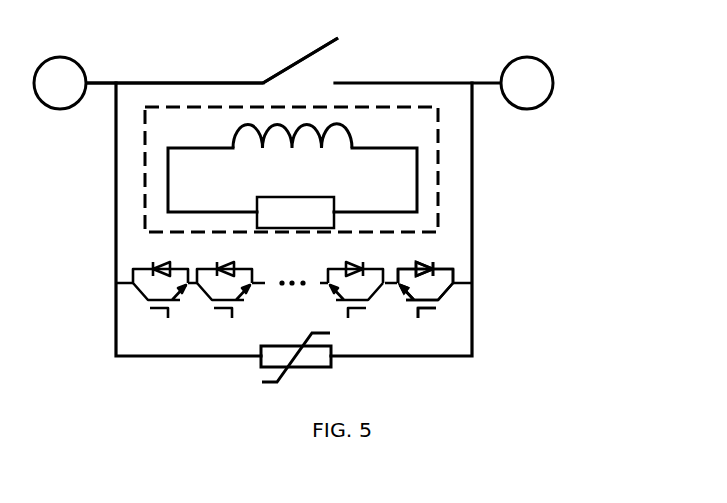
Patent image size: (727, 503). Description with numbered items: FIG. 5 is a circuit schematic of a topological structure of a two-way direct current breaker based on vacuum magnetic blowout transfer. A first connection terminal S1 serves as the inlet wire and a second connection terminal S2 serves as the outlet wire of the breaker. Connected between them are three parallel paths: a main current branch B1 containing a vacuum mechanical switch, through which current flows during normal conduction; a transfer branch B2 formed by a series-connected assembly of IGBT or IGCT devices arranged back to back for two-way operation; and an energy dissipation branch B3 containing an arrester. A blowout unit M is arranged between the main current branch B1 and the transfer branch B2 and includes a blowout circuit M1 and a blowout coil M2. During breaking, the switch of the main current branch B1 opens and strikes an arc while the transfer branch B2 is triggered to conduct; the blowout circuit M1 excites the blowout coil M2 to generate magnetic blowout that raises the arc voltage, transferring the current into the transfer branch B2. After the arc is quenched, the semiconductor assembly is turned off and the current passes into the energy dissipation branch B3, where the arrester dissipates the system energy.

The first connection terminal S1 is at (60, 83).
The second connection terminal S2 is at (527, 83).
The main current branch B1 is at (146, 83).
The transfer branch B2 is at (455, 283).
The energy dissipation branch B3 is at (412, 357).
The blowout unit M is at (438, 208).
The blowout circuit M1 is at (295, 214).
The blowout coil M2 is at (348, 129).